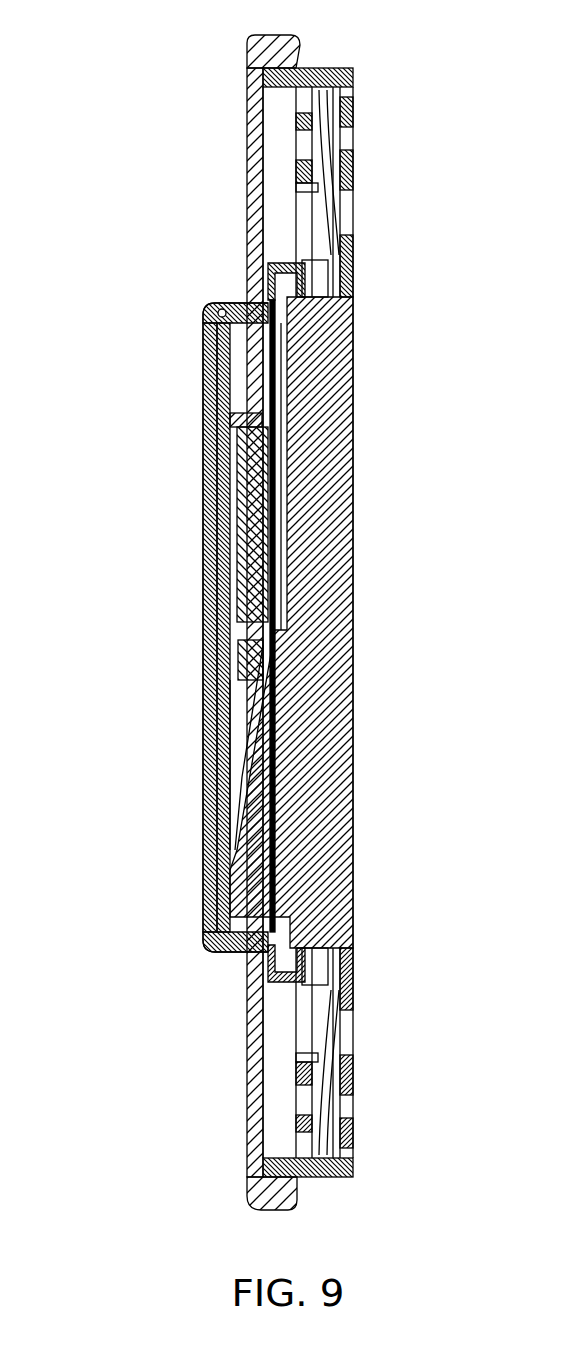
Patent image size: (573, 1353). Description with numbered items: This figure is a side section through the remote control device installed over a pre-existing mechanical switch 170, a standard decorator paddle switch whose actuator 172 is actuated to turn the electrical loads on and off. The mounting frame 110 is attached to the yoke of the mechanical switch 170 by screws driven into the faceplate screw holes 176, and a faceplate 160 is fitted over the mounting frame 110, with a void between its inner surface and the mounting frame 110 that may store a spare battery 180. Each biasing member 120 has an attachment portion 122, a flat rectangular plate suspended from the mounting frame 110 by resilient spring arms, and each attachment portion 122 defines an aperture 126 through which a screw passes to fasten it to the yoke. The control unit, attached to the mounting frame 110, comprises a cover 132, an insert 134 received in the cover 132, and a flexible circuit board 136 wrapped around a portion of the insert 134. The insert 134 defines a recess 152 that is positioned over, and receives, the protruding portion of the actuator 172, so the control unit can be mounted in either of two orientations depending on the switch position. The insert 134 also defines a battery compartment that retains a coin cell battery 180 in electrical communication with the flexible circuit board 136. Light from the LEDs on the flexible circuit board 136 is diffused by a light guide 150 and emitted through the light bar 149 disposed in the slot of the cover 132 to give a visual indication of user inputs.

The mounting frame 110 is at (353, 75).
The biasing member 120 is at (296, 236).
The attachment portion 122 is at (296, 172).
The aperture 126 is at (302, 142).
The cover 132 is at (210, 302).
The insert 134 is at (237, 363).
The flexible circuit board 136 is at (272, 563).
The light bar 149 is at (203, 602).
The light guide 150 is at (227, 887).
The recess 152 is at (235, 878).
The faceplate 160 is at (247, 147).
The mechanical switch 170 is at (355, 698).
The actuator 172 is at (270, 792).
The faceplate screw hole 176 is at (343, 150).
The coin cell battery 180 is at (255, 485).